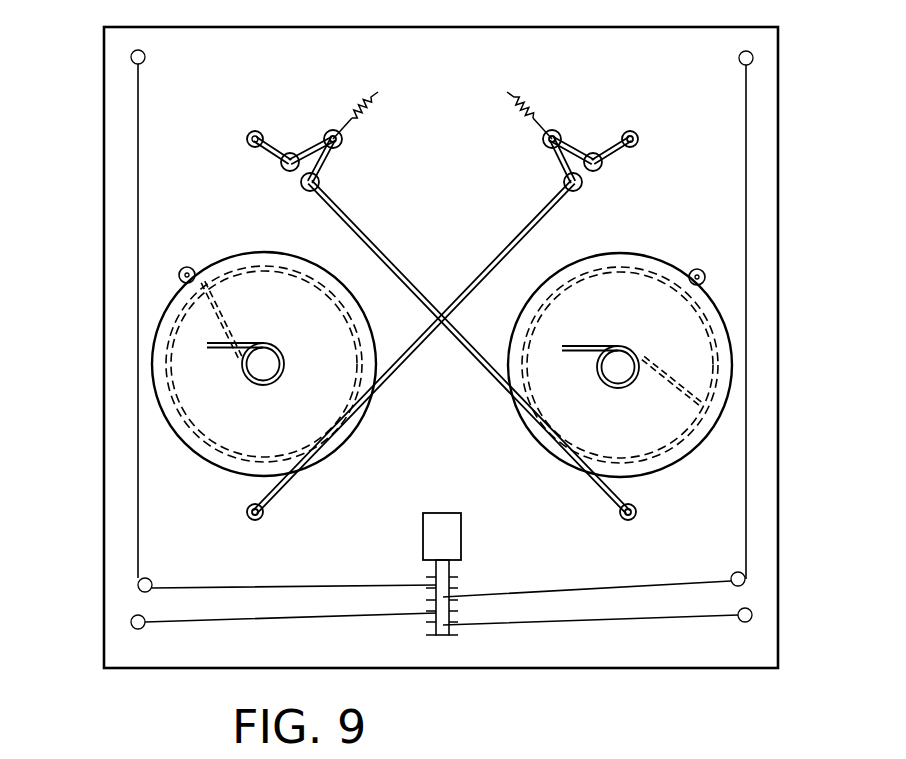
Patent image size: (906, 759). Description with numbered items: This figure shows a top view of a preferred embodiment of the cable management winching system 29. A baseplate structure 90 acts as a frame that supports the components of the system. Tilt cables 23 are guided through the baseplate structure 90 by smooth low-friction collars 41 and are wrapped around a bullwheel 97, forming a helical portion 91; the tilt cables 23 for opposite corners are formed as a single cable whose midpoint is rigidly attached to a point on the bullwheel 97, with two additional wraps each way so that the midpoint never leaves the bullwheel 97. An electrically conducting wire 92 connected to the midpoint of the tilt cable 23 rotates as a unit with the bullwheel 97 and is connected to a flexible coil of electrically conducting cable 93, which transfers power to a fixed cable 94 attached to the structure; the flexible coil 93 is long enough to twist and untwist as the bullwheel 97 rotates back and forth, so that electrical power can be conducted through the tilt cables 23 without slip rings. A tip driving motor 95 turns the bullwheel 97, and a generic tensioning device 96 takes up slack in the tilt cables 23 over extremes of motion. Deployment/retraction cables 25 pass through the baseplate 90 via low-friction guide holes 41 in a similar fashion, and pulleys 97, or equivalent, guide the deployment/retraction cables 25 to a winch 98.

The baseplate structure 90 is at (778, 640).
The deployment/retraction cables 25 is at (746, 137).
The low-friction collars 41 is at (247, 138).
The tilt cables 23 is at (272, 152).
The tensioning device 96 is at (560, 128).
The bullwheel 97 is at (713, 427).
The cable management winching system 29 is at (86, 354).
The electrically conducting wire 92 is at (217, 311).
The fixed cable 94 is at (222, 350).
The flexible coil of electrically conducting cable 93 is at (253, 384).
The helical portion 91 is at (713, 335).
The tip driving motor 95 is at (705, 270).
The winch 98 is at (447, 636).